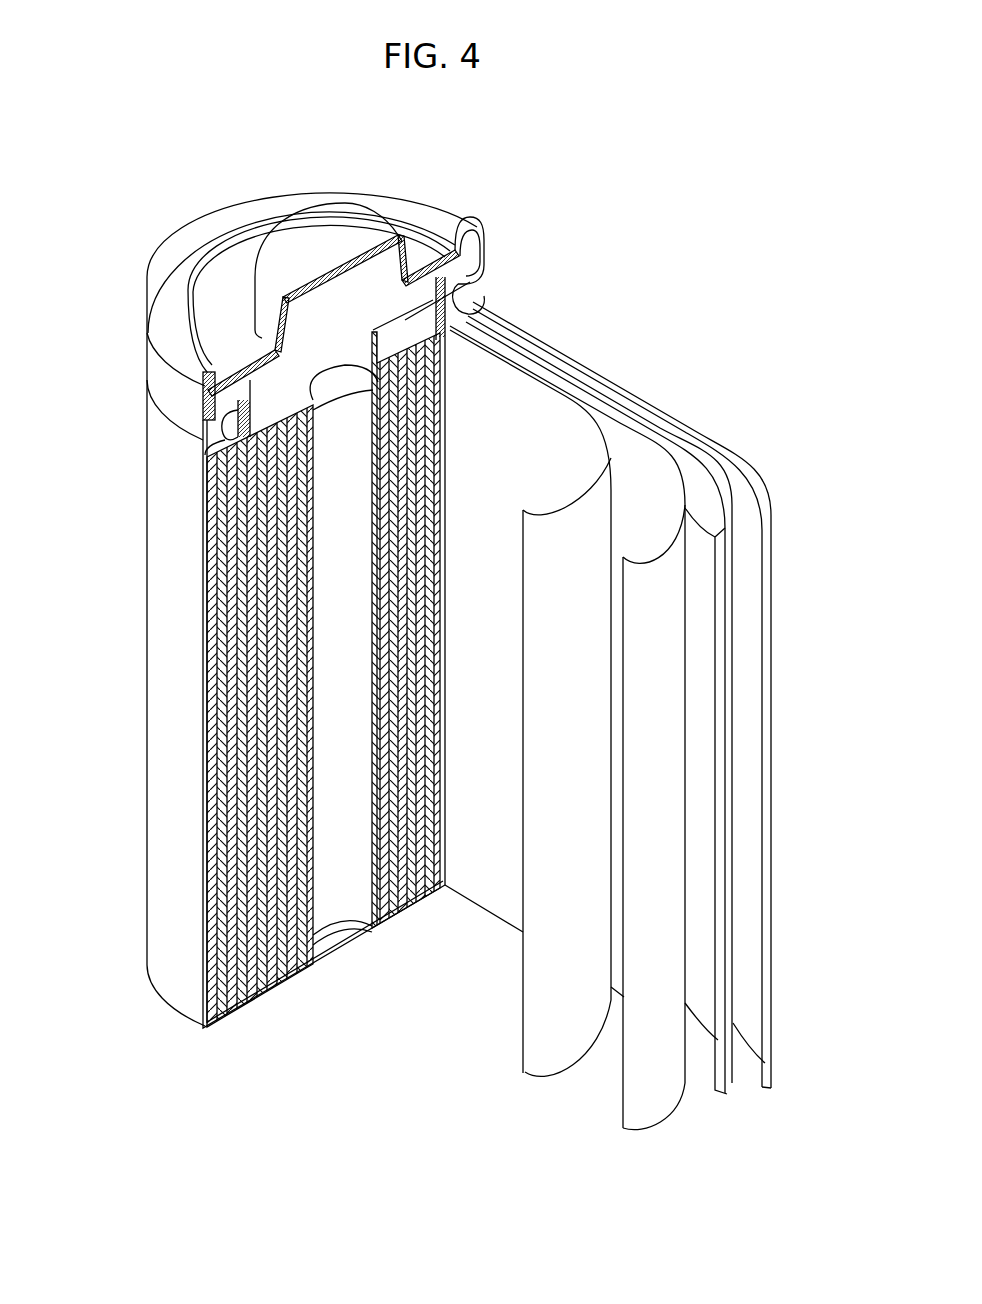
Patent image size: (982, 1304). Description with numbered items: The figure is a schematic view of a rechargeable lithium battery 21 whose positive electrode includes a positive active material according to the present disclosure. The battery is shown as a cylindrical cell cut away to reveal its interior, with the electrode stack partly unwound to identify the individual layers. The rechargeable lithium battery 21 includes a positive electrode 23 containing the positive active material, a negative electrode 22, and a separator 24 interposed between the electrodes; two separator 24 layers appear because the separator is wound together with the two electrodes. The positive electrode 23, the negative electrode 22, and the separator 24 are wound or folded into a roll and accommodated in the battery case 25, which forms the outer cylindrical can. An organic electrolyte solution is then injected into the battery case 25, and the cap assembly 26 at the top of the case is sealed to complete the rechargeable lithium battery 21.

The rechargeable lithium battery 21 is at (480, 178).
The negative electrode 22 is at (735, 465).
The positive electrode 23 is at (620, 435).
The separator 24 is at (498, 378).
The battery case 25 is at (152, 660).
The cap assembly 26 is at (293, 240).